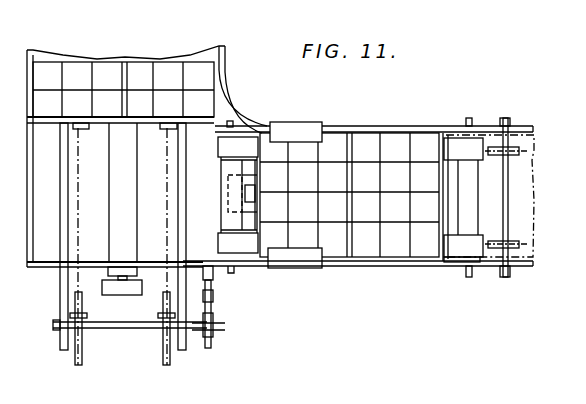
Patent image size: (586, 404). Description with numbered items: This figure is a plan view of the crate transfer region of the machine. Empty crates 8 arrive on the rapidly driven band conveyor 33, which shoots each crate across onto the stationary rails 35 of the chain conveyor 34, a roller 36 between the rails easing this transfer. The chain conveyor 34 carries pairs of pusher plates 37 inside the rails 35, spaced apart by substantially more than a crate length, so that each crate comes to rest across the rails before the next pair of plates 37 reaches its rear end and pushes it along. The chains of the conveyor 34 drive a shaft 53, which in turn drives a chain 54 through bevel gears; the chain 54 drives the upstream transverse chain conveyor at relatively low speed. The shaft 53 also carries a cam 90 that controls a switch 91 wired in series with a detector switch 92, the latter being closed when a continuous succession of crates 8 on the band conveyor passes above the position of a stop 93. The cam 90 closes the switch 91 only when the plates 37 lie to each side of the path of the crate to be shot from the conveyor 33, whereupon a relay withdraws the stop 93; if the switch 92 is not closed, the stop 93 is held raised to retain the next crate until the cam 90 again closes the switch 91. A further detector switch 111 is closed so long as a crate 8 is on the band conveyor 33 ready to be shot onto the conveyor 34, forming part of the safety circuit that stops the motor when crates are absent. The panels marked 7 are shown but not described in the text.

The panel 7 is at (170, 68).
The crate 8 is at (194, 121).
The band conveyor 33 is at (243, 143).
The chain conveyor 34 is at (80, 170).
The stationary rails 35 is at (61, 219).
The roller 36 is at (128, 207).
The pusher plates 37 is at (98, 130).
The shaft 53 is at (145, 328).
The chain 54 is at (245, 269).
The cam 90 is at (208, 349).
The switch 91 is at (198, 262).
The detector switch 92 is at (305, 268).
The stop 93 is at (242, 193).
The detector switch 111 is at (298, 128).